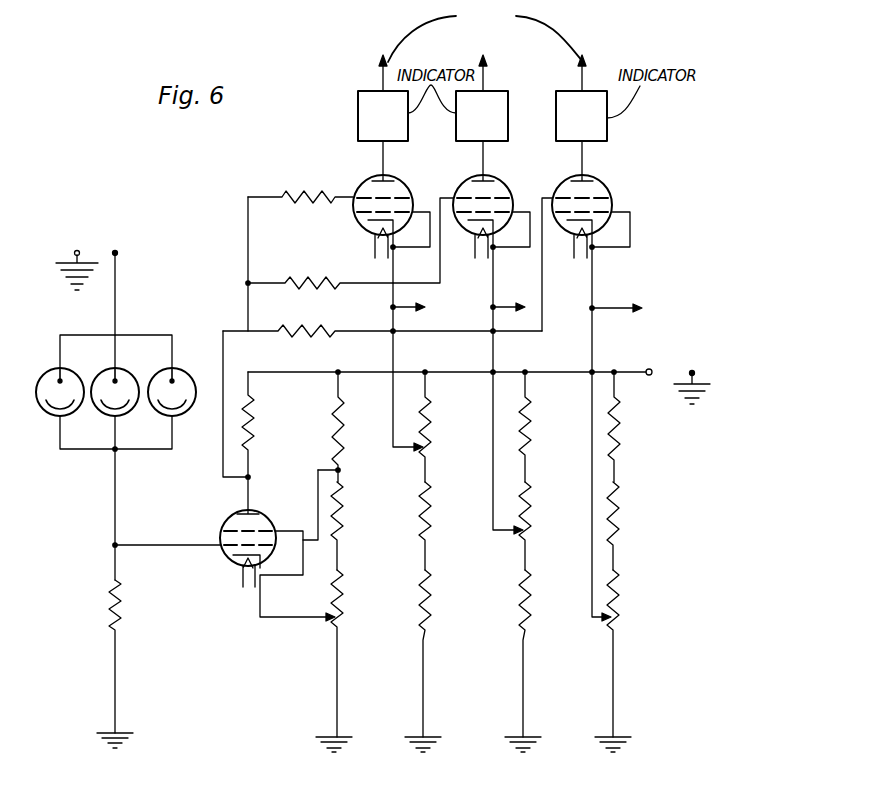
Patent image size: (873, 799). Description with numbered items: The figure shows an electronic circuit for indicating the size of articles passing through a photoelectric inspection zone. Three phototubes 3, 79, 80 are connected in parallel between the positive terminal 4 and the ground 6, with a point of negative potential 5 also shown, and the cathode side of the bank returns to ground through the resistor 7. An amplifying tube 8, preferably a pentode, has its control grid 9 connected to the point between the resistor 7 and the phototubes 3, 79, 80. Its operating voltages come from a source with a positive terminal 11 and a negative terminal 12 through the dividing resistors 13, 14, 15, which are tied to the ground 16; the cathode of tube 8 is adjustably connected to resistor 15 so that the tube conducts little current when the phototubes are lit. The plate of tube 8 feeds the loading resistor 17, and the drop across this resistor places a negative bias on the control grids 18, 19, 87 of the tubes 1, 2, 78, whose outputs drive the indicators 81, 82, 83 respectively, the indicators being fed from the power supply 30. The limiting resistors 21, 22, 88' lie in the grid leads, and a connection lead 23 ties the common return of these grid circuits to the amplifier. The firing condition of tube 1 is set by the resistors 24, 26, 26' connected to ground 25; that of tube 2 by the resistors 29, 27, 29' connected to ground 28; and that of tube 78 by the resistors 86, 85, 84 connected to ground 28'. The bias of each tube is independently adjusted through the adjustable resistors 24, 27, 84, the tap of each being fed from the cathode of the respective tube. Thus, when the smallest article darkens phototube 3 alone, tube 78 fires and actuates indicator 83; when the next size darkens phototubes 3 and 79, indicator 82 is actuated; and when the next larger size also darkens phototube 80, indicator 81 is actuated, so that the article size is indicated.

The tube 1 is at (404, 180).
The tube 2 is at (505, 180).
The phototube 3 is at (58, 368).
The positive terminal 4 is at (127, 255).
The point of negative potential 5 is at (74, 252).
The ground 6 is at (116, 733).
The resistor 7 is at (110, 607).
The amplifying tube 8 is at (272, 523).
The control grid 9 is at (222, 548).
The positive terminal 11 is at (647, 370).
The negative terminal 12 is at (700, 364).
The dividing resistor 13 is at (340, 432).
The dividing resistor 14 is at (340, 520).
The dividing resistor 15 is at (340, 608).
The ground 16 is at (336, 736).
The loading resistor 17 is at (250, 427).
The control grid 18 is at (362, 183).
The control grid 19 is at (446, 198).
The limiting resistor 21 is at (300, 195).
The limiting resistor 22 is at (300, 283).
The connection lead 23 is at (222, 364).
The adjustable resistor 24 is at (427, 442).
The ground 25 is at (425, 736).
The resistor 26 is at (446, 526).
The resistor 26' is at (449, 653).
The adjustable resistor 27 is at (527, 520).
The ground 28 is at (541, 727).
The ground 28' is at (625, 730).
The resistor 29 is at (547, 427).
The resistor 29' is at (549, 653).
The power supply 30 is at (522, 167).
The tube 78 is at (605, 180).
The phototube 79 is at (110, 417).
The phototube 80 is at (178, 417).
The indicator 81 is at (383, 116).
The indicator 82 is at (482, 116).
The indicator 83 is at (581, 116).
The adjustable resistor 84 is at (615, 612).
The resistor 85 is at (615, 525).
The resistor 86 is at (617, 452).
The control grid 87 is at (553, 200).
The limiting resistor 88' is at (382, 320).